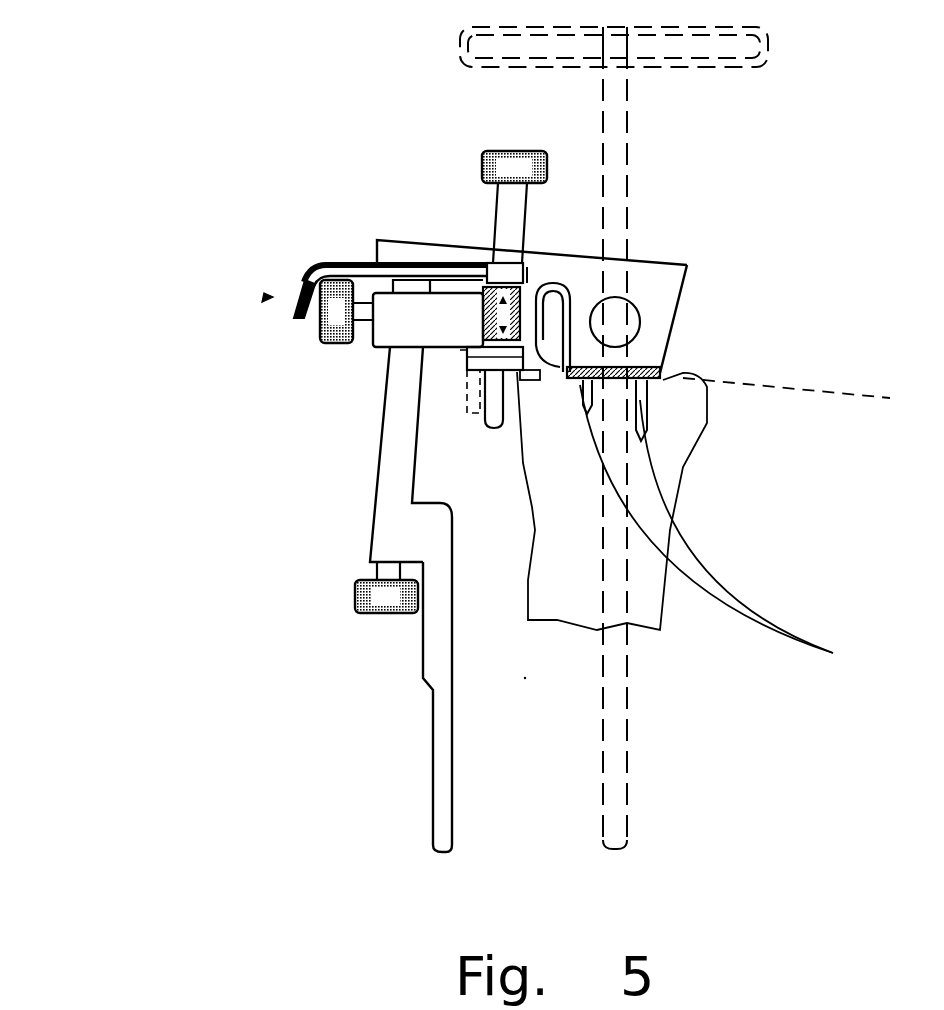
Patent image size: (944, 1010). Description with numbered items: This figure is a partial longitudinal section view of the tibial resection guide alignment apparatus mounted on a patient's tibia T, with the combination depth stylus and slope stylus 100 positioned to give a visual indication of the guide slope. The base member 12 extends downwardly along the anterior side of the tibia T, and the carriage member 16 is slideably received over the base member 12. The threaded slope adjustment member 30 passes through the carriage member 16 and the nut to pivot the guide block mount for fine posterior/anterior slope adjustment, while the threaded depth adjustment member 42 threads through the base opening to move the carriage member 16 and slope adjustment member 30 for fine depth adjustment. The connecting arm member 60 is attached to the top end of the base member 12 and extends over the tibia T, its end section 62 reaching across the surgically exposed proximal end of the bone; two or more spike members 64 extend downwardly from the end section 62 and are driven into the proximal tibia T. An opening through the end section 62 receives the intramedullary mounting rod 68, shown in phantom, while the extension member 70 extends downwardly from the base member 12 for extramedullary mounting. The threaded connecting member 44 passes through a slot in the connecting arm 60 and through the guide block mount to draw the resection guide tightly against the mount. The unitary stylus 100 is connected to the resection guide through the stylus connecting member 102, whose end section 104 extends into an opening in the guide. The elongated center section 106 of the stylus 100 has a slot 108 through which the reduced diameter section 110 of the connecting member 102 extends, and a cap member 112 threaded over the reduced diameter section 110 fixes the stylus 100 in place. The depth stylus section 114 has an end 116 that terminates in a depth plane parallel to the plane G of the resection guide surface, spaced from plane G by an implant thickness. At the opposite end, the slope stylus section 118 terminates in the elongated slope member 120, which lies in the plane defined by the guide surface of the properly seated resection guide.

The base member 12 is at (373, 462).
The carriage member 16 is at (410, 322).
The slope adjustment member 30 is at (323, 347).
The depth adjustment member 42 is at (372, 570).
The connecting member 44 is at (490, 260).
The connecting arm member 60 is at (570, 256).
The end section 62 is at (663, 287).
The spike members 64 is at (733, 527).
The intramedullary mounting rod 68 is at (630, 157).
The extension member 70 is at (430, 780).
The combination depth stylus and slope stylus 100 is at (333, 259).
The stylus connecting member 102 is at (520, 318).
The end section 104 is at (497, 430).
The elongated center section 106 is at (362, 262).
The slot 108 is at (318, 274).
The reduced diameter section 110 is at (527, 267).
The cap member 112 is at (482, 260).
The depth stylus section 114 is at (264, 297).
The end 116 is at (292, 318).
The slope stylus section 118 is at (565, 340).
The elongated slope member 120 is at (658, 383).
The plane of the resection guide guide surface G is at (840, 397).
The tibia T is at (657, 592).